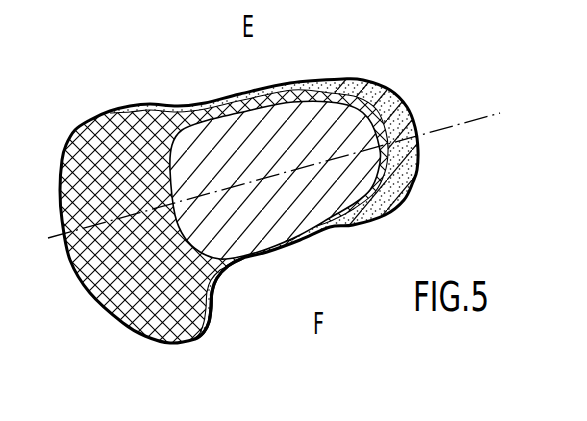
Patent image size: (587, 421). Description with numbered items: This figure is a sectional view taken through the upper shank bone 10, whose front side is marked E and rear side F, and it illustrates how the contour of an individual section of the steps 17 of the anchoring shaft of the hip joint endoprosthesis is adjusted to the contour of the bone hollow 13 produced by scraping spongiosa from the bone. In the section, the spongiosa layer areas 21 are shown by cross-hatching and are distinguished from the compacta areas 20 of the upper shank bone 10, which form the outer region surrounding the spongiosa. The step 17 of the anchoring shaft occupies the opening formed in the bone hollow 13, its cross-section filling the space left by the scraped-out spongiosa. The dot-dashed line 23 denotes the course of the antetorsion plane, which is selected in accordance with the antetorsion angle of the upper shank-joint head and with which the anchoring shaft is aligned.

The upper shank bone 10 is at (322, 72).
The bone hollow 13 is at (176, 130).
The steps 17 is at (300, 200).
The compacta areas 20 is at (388, 92).
The spongiosa layer areas 21 is at (214, 318).
The antetorsion plane 23 is at (489, 97).